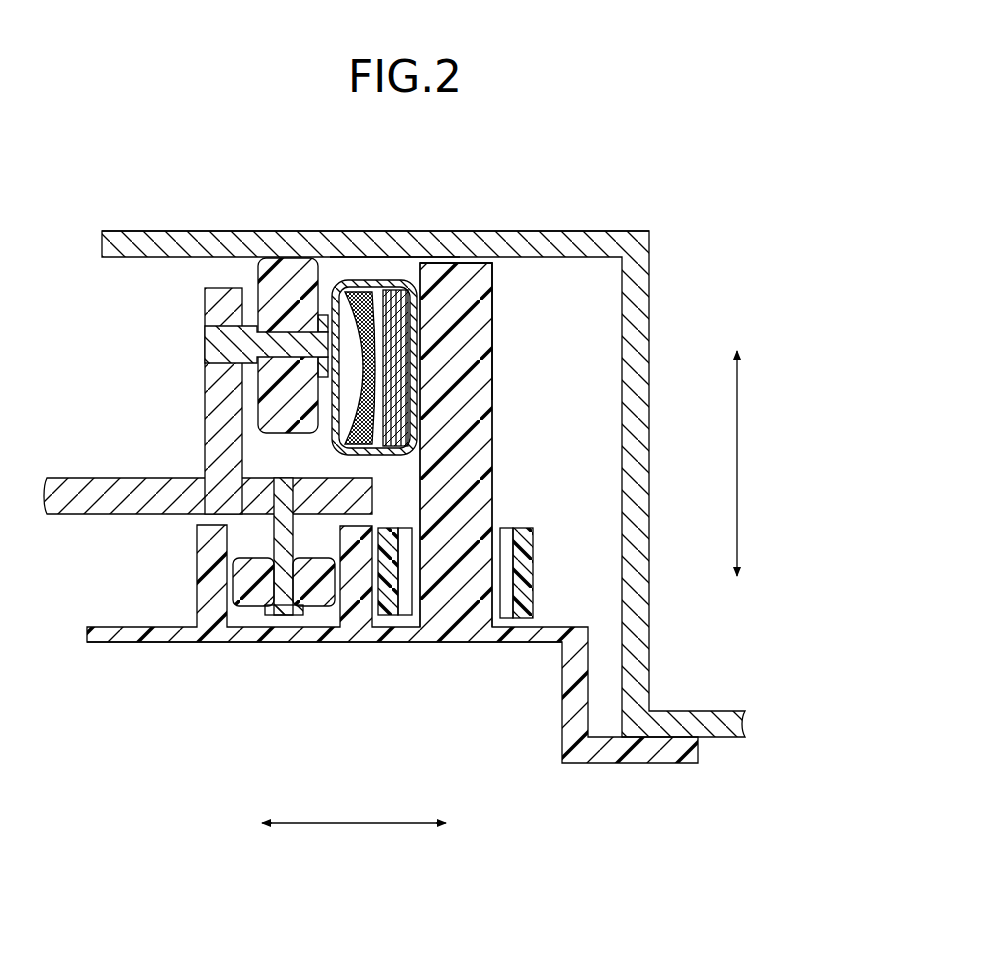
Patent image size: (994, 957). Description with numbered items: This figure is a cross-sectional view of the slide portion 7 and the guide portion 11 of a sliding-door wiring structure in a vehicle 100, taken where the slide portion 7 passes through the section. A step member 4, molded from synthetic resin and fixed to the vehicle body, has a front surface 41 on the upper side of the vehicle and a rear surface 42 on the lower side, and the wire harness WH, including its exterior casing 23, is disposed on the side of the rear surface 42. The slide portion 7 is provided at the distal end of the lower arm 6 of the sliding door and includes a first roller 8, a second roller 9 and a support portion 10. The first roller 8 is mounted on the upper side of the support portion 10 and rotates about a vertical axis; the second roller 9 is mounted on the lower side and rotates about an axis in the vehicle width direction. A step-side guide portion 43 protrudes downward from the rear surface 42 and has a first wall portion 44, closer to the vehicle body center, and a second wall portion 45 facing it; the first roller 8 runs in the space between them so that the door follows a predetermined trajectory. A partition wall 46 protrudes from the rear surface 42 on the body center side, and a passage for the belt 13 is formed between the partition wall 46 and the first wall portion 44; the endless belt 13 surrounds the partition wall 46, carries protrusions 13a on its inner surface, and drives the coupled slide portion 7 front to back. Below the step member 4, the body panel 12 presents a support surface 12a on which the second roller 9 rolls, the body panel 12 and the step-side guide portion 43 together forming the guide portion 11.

The vehicle 100 is at (655, 177).
The step member 4 is at (556, 587).
The lower arm 6 is at (76, 454).
The slide portion 7 is at (149, 312).
The first roller 8 is at (257, 554).
The second roller 9 is at (247, 274).
The support portion 10 is at (203, 438).
The guide portion 11 is at (336, 229).
The body panel 12 is at (450, 229).
The support surface 12a is at (405, 257).
The belt 13 is at (391, 504).
The protrusion 13a is at (412, 543).
The exterior casing 23 is at (328, 270).
The front surface 41 is at (520, 642).
The rear surface 42 is at (548, 626).
The step-side guide portion 43 is at (282, 648).
The first wall portion 44 is at (338, 612).
The second wall portion 45 is at (227, 612).
The partition wall 46 is at (495, 294).
The wire harness WH is at (334, 279).